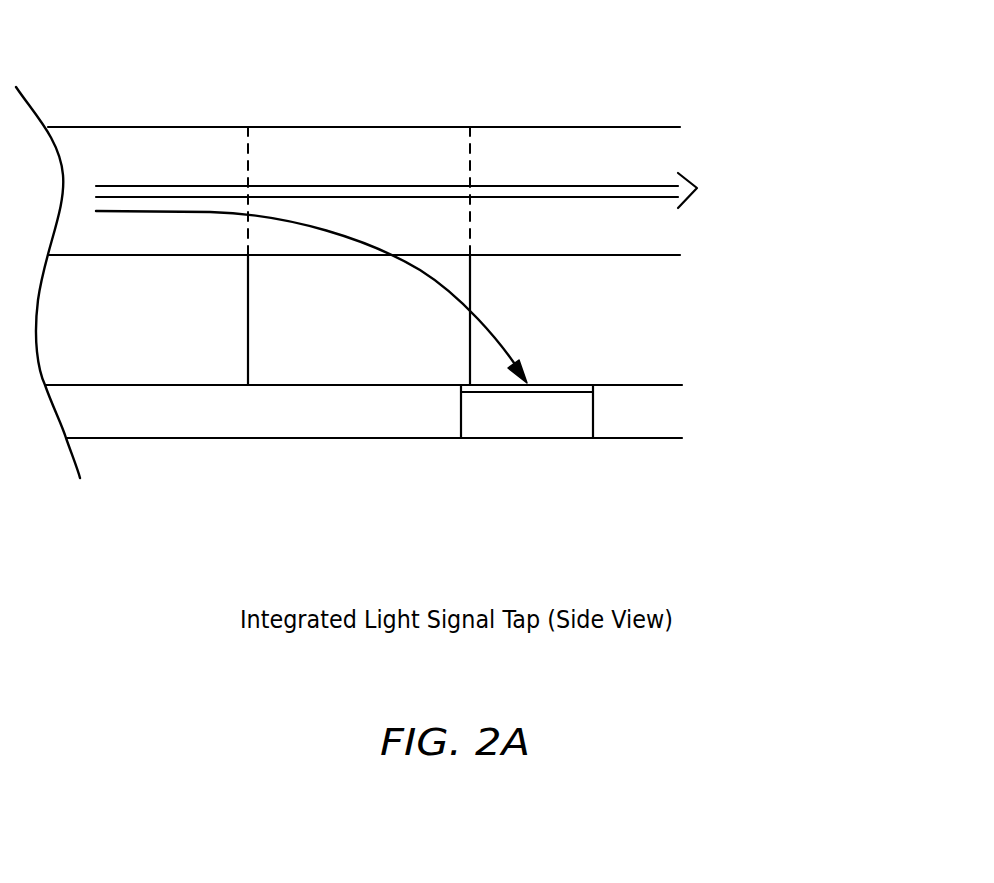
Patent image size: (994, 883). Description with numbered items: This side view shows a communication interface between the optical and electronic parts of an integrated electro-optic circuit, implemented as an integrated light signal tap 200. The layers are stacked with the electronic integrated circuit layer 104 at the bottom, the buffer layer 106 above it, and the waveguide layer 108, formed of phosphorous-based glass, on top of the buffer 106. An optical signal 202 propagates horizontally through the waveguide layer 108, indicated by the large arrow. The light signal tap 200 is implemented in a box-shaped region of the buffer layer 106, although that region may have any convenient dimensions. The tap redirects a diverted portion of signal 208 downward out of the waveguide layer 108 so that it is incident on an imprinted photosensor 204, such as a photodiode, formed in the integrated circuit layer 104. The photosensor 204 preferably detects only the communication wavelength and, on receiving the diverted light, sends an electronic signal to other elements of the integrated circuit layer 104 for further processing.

The electronic integrated circuit layer 104 is at (359, 418).
The buffer layer 106 is at (128, 343).
The waveguide layer 108 is at (143, 150).
The integrated light signal tap 200 is at (448, 278).
The optical signal 202 is at (700, 172).
The photosensor 204 is at (520, 438).
The diverted portion of signal 208 is at (493, 343).